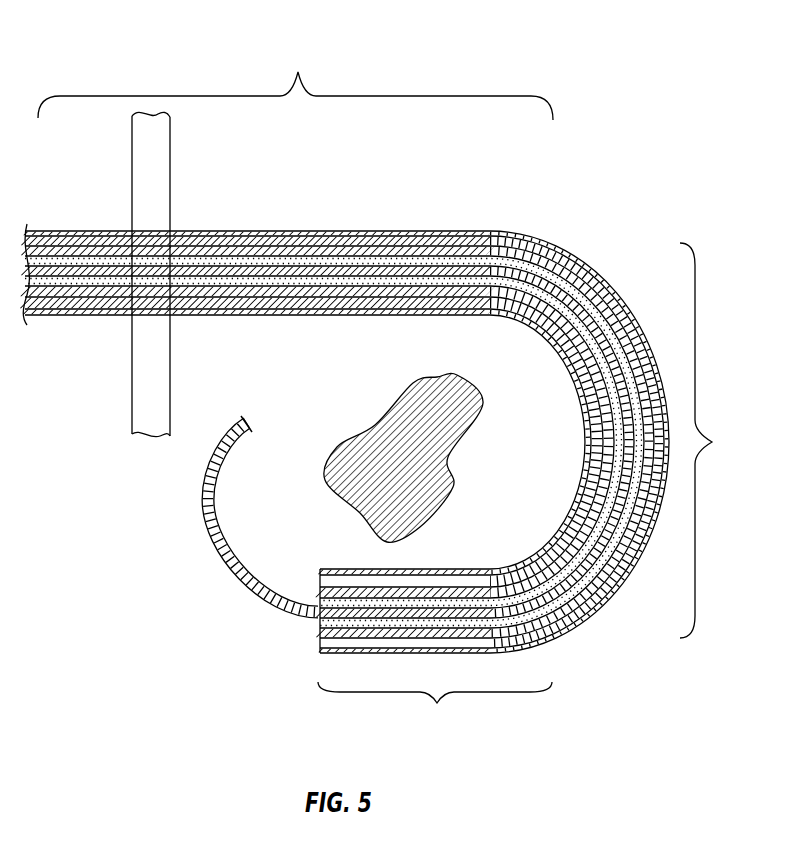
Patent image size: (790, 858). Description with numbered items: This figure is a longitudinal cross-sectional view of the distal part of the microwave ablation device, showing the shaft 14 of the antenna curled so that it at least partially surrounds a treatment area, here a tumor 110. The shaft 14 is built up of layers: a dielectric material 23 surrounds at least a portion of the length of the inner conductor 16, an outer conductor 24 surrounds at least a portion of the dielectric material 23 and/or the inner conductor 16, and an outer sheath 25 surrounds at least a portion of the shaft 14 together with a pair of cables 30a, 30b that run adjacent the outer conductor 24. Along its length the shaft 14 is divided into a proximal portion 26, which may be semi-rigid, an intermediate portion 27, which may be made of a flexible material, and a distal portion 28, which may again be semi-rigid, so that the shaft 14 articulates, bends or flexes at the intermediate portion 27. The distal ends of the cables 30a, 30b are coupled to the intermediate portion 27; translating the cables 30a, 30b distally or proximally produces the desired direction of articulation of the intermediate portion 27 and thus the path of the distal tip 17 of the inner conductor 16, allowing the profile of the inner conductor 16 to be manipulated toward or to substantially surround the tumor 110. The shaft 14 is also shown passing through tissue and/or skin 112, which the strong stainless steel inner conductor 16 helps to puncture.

The shaft 14 is at (473, 180).
The inner conductor 16 is at (345, 270).
The distal tip 17 is at (250, 420).
The dielectric material 23 is at (445, 258).
The outer conductor 24 is at (537, 268).
The outer sheath 25 is at (300, 233).
The proximal portion 26 is at (295, 75).
The intermediate portion 27 is at (713, 440).
The distal portion 28 is at (435, 712).
The cable 30a is at (202, 238).
The cable 30b is at (202, 316).
The tumor 110 is at (423, 378).
The tissue and/or skin 112 is at (132, 180).